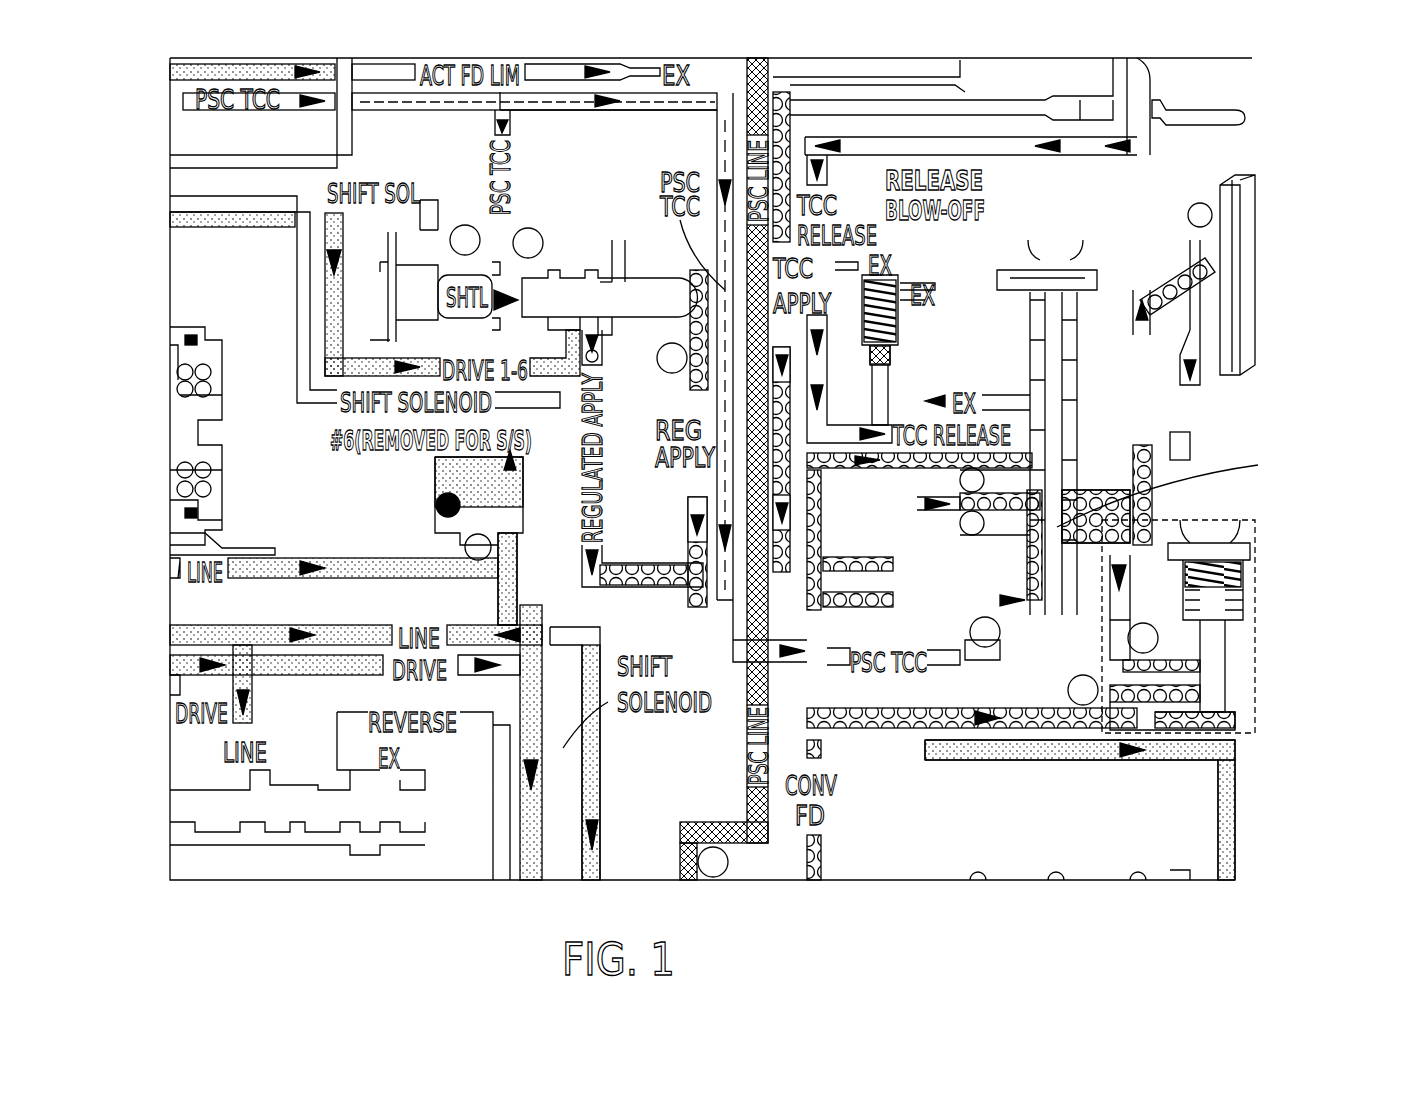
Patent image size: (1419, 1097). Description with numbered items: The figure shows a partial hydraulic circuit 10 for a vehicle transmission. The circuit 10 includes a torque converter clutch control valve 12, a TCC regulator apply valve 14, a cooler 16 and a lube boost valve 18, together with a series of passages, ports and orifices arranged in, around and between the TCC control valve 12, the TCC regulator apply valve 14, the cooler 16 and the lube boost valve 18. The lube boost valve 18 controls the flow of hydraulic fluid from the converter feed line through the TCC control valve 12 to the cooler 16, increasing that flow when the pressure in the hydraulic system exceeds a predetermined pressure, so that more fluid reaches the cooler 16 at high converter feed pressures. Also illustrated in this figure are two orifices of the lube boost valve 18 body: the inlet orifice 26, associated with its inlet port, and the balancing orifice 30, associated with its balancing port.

The partial hydraulic circuit 10 is at (1298, 350).
The torque converter clutch (TCC) control valve 12 is at (1075, 473).
The TCC regulator apply valve 14 is at (540, 275).
The cooler 16 is at (1247, 275).
The lube boost valve 18 is at (1262, 590).
The inlet orifice 26 is at (1140, 700).
The balancing orifice 30 is at (1140, 725).